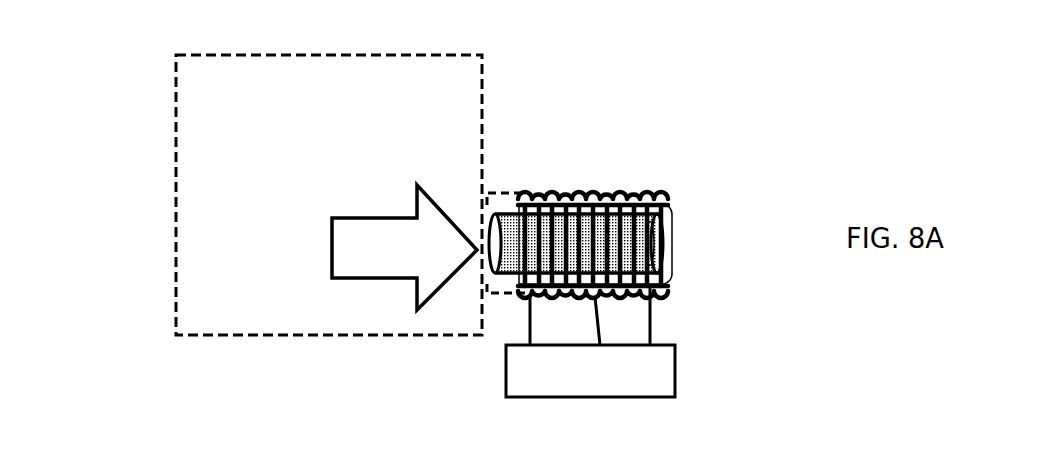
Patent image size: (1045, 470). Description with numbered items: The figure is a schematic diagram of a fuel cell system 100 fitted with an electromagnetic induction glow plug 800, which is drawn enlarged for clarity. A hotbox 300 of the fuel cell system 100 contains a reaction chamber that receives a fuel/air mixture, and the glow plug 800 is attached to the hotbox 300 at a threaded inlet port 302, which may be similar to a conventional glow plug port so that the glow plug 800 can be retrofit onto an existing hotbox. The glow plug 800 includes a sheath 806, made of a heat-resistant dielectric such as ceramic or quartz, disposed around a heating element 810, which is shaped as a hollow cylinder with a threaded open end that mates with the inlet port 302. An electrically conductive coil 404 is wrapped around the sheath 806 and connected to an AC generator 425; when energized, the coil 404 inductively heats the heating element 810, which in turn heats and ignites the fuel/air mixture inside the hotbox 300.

The fuel cell system 100 is at (139, 51).
The hotbox 300 is at (355, 170).
The inlet port 302 is at (505, 193).
The electrically conductive coil 404 is at (642, 197).
The electromagnetic induction glow plug 800 is at (688, 174).
The sheath 806 is at (675, 243).
The heating element 810 is at (663, 252).
The AC generator 425 is at (675, 372).